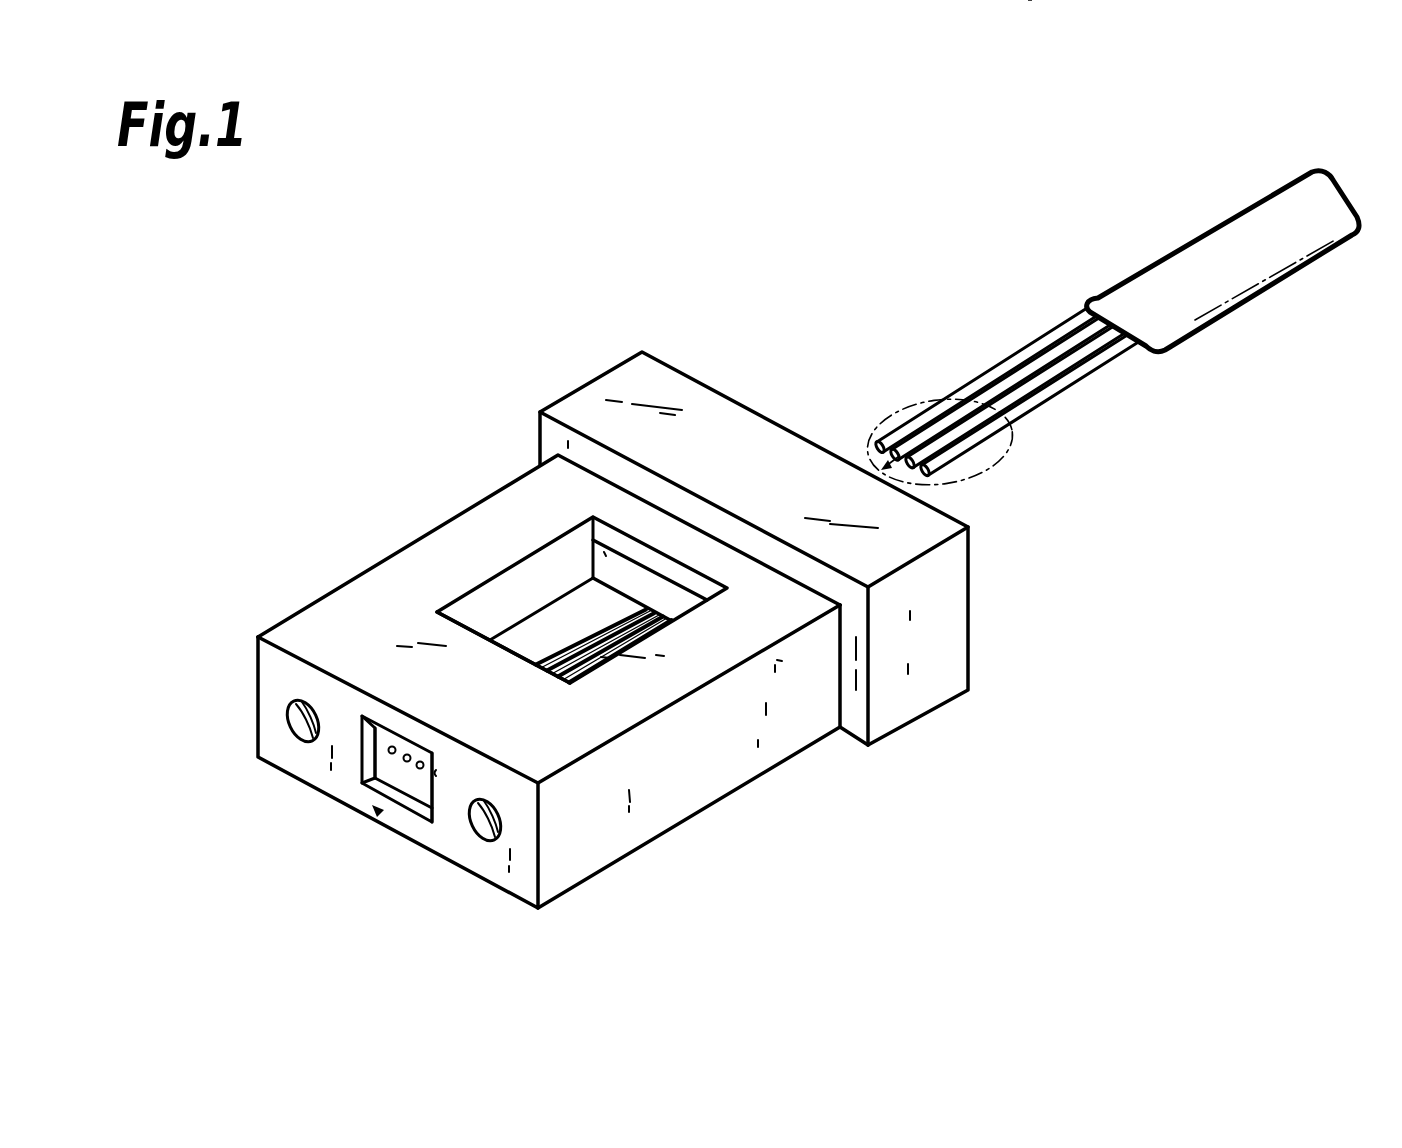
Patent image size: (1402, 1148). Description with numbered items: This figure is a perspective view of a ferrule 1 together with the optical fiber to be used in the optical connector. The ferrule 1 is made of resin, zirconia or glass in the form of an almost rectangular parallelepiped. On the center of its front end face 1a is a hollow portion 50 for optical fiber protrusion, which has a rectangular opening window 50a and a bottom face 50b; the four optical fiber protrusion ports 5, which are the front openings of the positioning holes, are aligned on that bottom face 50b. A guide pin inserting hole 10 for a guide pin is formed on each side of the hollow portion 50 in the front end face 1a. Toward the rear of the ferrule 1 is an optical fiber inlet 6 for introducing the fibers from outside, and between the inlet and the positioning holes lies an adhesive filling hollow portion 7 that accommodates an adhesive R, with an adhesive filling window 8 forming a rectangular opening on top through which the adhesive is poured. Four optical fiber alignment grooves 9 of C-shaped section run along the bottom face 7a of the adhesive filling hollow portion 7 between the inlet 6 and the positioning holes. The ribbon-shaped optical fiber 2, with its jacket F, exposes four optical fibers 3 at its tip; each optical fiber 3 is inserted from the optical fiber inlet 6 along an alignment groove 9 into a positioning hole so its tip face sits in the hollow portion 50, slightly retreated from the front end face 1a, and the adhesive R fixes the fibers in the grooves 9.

The ferrule 1 is at (597, 479).
The front end face 1a is at (347, 705).
The ribbon-shaped optical fiber 2 is at (1110, 300).
The optical fiber 3 is at (1047, 400).
The optical fiber protrusion port 5 is at (416, 768).
The optical fiber inlet 6 is at (665, 594).
The adhesive filling hollow portion 7 is at (530, 572).
The bottom face of adhesive filling hollow portion 7a is at (530, 638).
The adhesive filling window 8 is at (467, 590).
The optical fiber alignment groove 9 is at (598, 620).
The guide pin inserting hole 10 is at (285, 716).
The hollow portion for optical fiber protrusion 50 is at (372, 820).
The rectangular opening window 50a is at (432, 797).
The bottom face of hollow portion 50b is at (415, 790).
The cable jacket F is at (1253, 263).
The adhesive R is at (885, 405).